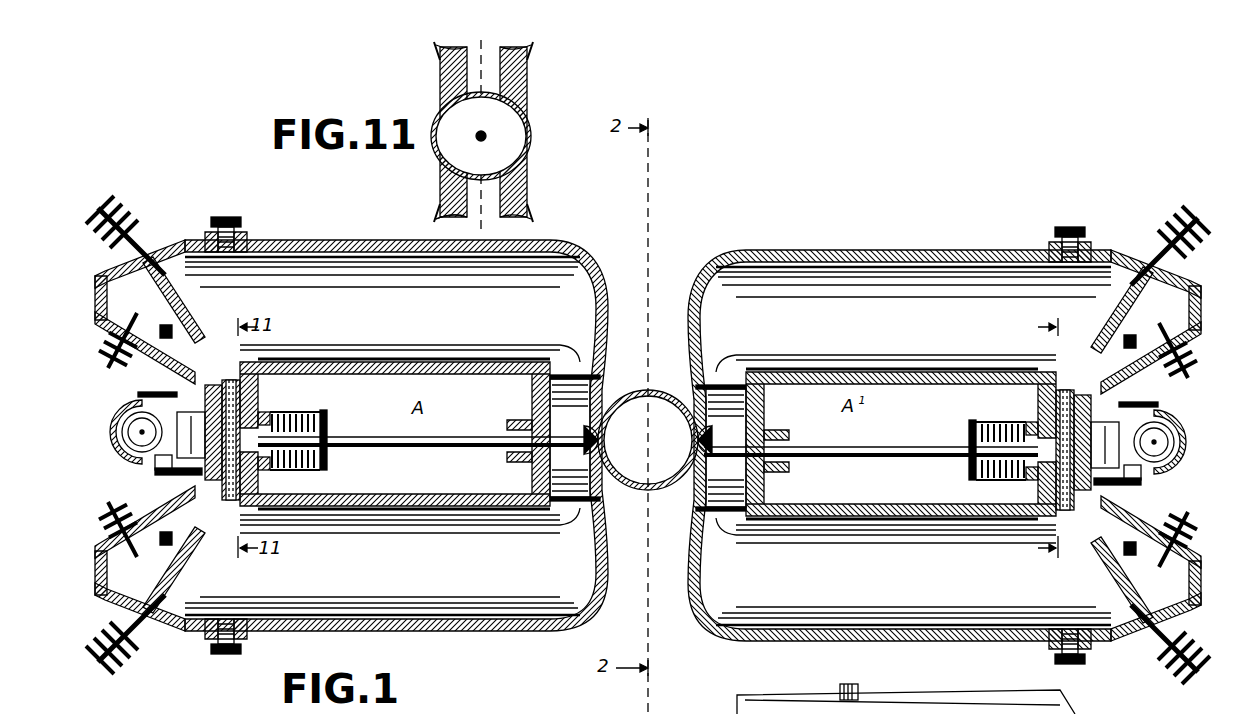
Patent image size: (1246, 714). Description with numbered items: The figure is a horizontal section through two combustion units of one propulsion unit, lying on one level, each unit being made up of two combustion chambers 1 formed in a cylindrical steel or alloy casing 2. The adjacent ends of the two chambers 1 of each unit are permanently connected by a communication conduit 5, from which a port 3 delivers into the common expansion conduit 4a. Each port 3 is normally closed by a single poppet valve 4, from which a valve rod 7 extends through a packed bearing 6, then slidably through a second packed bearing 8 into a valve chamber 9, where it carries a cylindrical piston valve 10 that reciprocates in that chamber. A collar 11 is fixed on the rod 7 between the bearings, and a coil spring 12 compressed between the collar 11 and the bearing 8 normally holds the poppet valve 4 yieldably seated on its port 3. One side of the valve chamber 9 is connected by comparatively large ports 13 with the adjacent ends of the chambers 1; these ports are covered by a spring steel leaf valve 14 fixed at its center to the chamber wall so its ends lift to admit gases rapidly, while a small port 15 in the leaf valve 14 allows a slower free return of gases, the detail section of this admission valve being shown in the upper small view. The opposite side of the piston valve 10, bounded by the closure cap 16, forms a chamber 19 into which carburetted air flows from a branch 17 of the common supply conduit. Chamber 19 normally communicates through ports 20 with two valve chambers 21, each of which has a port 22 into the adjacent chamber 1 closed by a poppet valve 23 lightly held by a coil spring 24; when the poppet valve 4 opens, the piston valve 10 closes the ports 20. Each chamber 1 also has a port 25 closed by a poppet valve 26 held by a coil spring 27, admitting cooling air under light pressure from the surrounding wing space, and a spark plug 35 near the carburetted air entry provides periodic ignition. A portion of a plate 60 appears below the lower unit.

In FIG. 11, the combustion chamber 1 is at (477, 130).
In FIG. 1, the combustion chamber 1 is at (583, 264).
In FIG. 1, the cylindrical casing 2 is at (342, 242).
In FIG. 1, the port 3 is at (600, 450).
In FIG. 1, the poppet valve 4 is at (600, 438).
In FIG. 1, the common expansion conduit 4a is at (640, 398).
In FIG. 1, the communication conduit 5 is at (556, 470).
In FIG. 1, the packed bearing 6 is at (512, 462).
In FIG. 1, the valve rod 7 is at (480, 436).
In FIG. 1, the packed bearing 8 is at (648, 444).
In FIG. 1, the valve chamber 9 is at (1040, 416).
In FIG. 1, the piston valve 10 is at (648, 440).
In FIG. 1, the collar 11 is at (322, 420).
In FIG. 1, the coil spring 12 is at (326, 460).
In FIG. 11, the port 13 is at (528, 60).
In FIG. 1, the port 13 is at (248, 360).
In FIG. 11, the leaf valve 14 is at (446, 108).
In FIG. 1, the leaf valve 14 is at (266, 410).
In FIG. 11, the small port 15 is at (446, 212).
In FIG. 1, the small port 15 is at (268, 472).
In FIG. 1, the closure cap 16 is at (120, 452).
In FIG. 1, the branch 17 is at (116, 426).
In FIG. 1, the chamber 19 is at (124, 440).
In FIG. 1, the port 20 is at (136, 394).
In FIG. 1, the valve chamber 21 is at (172, 352).
In FIG. 1, the port 22 is at (1156, 345).
In FIG. 1, the poppet valve 23 is at (168, 336).
In FIG. 1, the coil spring 24 is at (112, 350).
In FIG. 1, the port 25 is at (128, 300).
In FIG. 1, the poppet valve 26 is at (158, 284).
In FIG. 1, the coil spring 27 is at (132, 212).
In FIG. 1, the spark plug 35 is at (226, 216).
In FIG. 1, the plate 60 is at (838, 691).